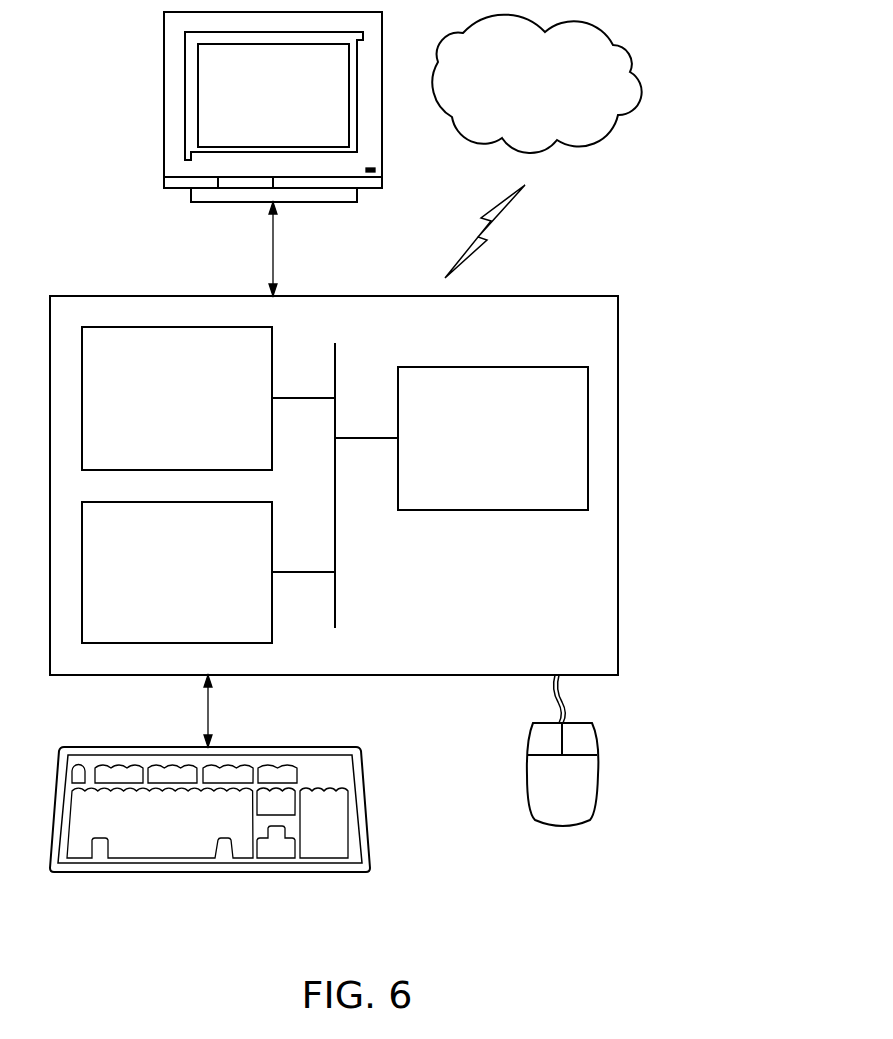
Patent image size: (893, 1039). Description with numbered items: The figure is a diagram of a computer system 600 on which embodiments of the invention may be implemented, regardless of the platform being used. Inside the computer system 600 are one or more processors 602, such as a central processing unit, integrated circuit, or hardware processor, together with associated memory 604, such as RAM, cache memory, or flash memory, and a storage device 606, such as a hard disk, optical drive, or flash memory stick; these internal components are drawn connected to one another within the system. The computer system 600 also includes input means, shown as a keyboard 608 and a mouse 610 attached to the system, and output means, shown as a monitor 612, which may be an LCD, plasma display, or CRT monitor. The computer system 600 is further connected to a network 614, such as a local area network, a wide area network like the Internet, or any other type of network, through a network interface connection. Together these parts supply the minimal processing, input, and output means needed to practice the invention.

The computer system 600 is at (670, 228).
The processor 602 is at (476, 460).
The memory 604 is at (160, 420).
The storage device 606 is at (160, 595).
The keyboard 608 is at (148, 843).
The mouse 610 is at (545, 806).
The monitor 612 is at (255, 113).
The network 614 is at (520, 105).